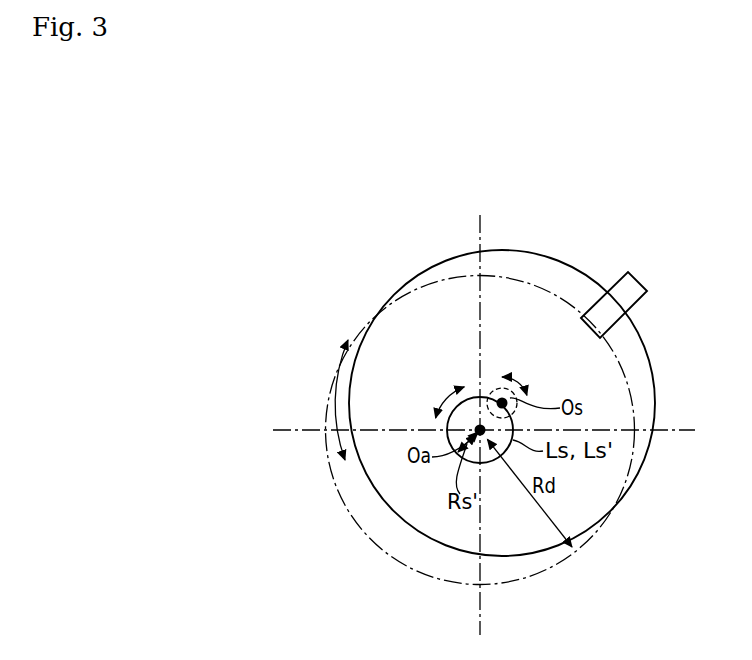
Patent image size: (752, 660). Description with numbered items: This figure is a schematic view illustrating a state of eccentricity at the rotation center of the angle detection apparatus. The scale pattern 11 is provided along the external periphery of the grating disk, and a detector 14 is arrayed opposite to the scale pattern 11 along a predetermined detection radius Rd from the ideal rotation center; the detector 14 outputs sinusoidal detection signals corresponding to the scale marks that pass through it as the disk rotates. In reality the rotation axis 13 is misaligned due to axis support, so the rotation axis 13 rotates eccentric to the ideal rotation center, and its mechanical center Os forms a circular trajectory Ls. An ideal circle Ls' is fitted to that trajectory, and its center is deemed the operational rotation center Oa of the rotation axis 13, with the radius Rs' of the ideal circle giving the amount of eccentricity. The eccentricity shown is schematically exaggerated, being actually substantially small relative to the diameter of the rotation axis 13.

The scale pattern 11 is at (518, 278).
The rotation axis 13 is at (518, 387).
The detector 14 is at (642, 280).